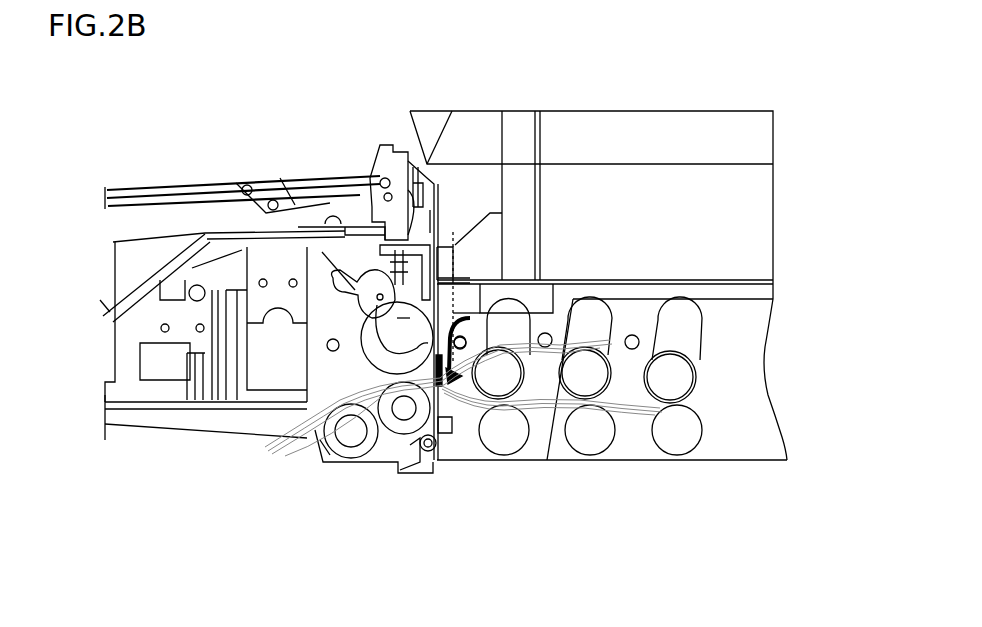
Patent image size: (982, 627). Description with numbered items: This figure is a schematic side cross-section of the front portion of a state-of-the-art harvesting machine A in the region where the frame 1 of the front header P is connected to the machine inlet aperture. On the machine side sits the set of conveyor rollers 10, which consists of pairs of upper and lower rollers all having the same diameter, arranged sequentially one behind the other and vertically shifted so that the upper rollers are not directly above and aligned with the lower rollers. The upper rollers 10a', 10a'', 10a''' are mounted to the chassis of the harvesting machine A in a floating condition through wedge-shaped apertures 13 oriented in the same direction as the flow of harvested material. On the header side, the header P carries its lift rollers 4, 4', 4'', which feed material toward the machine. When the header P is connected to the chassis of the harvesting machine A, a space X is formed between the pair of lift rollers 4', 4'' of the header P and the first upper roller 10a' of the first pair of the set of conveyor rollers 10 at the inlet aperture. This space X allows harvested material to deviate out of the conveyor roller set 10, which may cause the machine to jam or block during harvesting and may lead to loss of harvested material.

The frame 1 is at (282, 270).
The lift roller 4 is at (358, 478).
The lift roller 4' is at (445, 475).
The lift roller 4'' is at (419, 459).
The set of conveyor rollers 10 is at (783, 527).
The first upper roller 10a' is at (519, 425).
The second upper roller 10a'' is at (611, 423).
The third upper roller 10a''' is at (702, 424).
The wedge-shaped apertures 13 is at (692, 340).
The harvesting machine A is at (758, 97).
The front header P is at (151, 143).
The space X is at (452, 285).